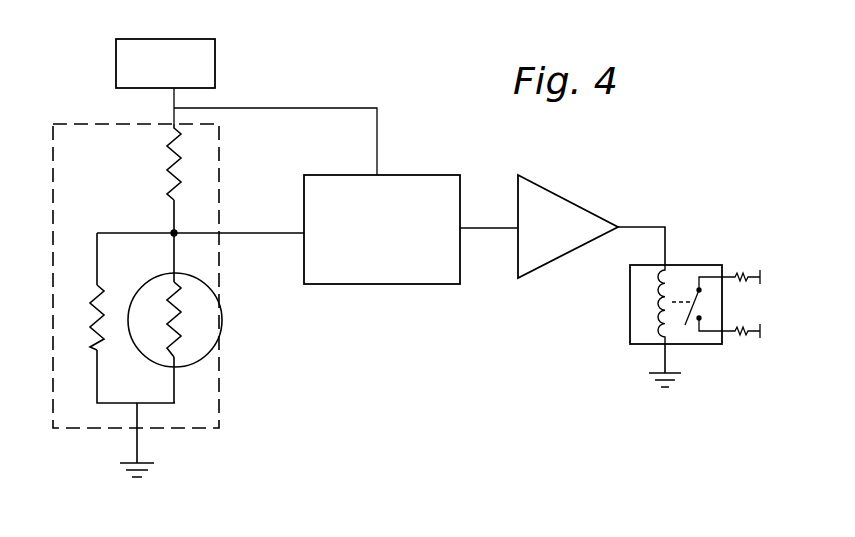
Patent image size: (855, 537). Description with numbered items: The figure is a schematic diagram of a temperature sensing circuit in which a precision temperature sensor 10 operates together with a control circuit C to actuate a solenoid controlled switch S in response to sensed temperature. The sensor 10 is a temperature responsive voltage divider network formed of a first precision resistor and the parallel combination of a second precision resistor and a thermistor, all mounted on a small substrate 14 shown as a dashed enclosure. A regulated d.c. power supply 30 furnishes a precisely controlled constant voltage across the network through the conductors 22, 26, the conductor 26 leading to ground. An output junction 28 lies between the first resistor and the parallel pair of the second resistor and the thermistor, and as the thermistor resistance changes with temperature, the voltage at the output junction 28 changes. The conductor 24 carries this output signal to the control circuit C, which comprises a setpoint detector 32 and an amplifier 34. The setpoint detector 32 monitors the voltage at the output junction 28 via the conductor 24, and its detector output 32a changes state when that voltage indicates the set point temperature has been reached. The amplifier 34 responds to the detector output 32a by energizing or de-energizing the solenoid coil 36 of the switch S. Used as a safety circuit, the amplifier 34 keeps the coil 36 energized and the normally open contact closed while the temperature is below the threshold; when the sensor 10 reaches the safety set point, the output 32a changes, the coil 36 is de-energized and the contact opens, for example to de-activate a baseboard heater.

The temperature sensor 10 is at (120, 184).
The substrate 14 is at (219, 362).
The electrical conductor 22 is at (176, 118).
The electrical conductor 24 is at (233, 232).
The electrical conductor 26 is at (137, 447).
The output junction 28 is at (173, 232).
The regulated d.c. power supply 30 is at (207, 53).
The setpoint detector 32 is at (388, 192).
The detector output 32a is at (482, 232).
The amplifier 34 is at (550, 203).
The solenoid coil 36 is at (660, 307).
The solenoid controlled switch S is at (688, 256).
The control circuit C is at (395, 312).